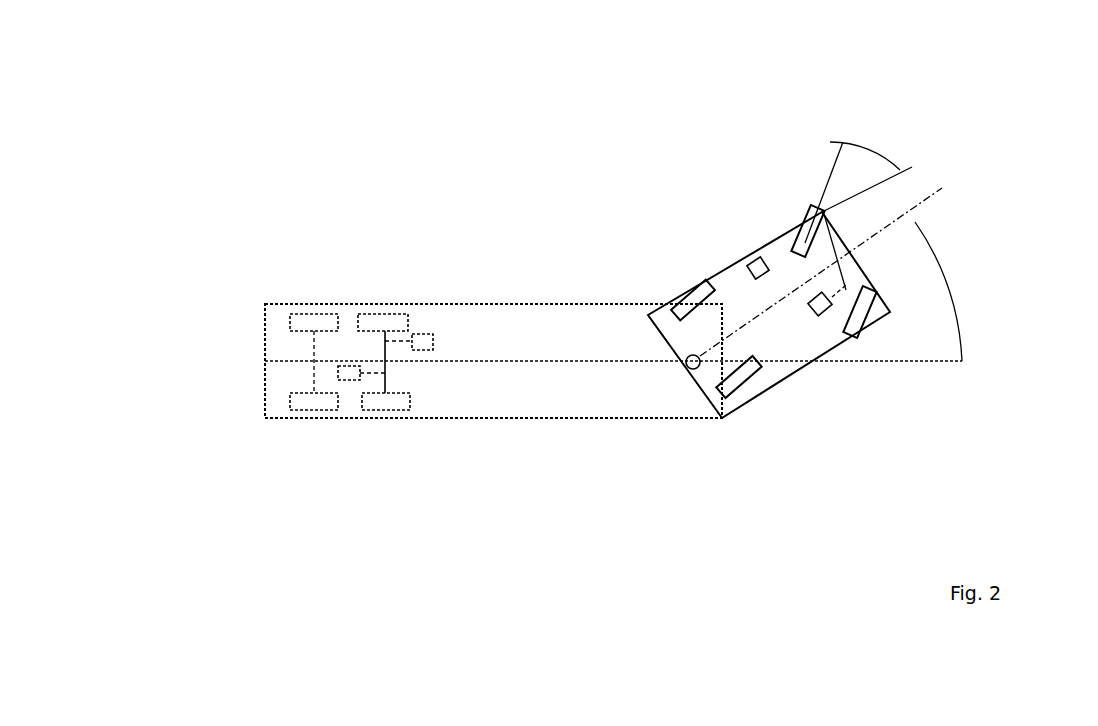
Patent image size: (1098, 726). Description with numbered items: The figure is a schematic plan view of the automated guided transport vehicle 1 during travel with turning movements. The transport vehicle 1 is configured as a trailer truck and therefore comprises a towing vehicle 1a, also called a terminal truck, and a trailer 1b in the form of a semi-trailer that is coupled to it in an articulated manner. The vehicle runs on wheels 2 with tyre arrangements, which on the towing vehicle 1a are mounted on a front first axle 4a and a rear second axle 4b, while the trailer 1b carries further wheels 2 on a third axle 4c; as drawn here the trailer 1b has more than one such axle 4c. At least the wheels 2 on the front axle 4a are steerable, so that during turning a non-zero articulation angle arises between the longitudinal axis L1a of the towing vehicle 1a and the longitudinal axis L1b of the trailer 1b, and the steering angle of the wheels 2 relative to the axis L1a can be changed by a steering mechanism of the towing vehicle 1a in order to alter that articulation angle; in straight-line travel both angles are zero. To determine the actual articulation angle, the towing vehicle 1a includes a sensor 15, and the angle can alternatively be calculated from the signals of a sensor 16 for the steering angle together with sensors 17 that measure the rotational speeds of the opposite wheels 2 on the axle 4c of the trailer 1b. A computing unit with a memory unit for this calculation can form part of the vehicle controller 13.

The transport vehicle 1 is at (558, 132).
The towing vehicle 1a is at (795, 338).
The trailer 1b is at (540, 400).
The wheels 2 is at (712, 302).
The front first axle 4a is at (835, 260).
The rear second axle 4b is at (718, 320).
The third axle 4c is at (305, 372).
The vehicle controller 13 is at (760, 254).
The sensor 15 is at (694, 372).
The sensor 16 is at (827, 316).
The sensors 17 is at (418, 330).
The longitudinal axis of the towing vehicle L1a is at (844, 266).
The longitudinal axis of the trailer L1b is at (488, 350).